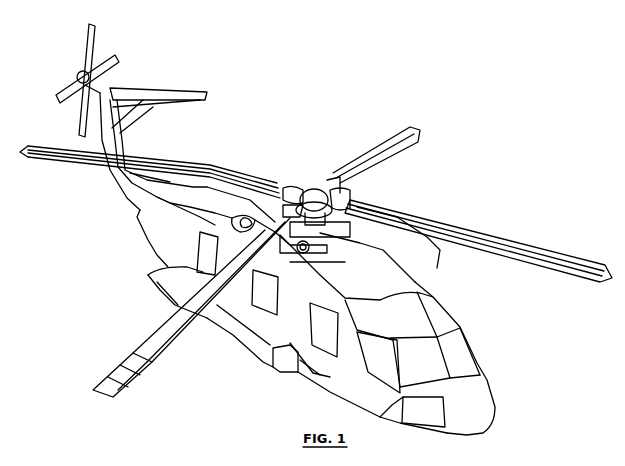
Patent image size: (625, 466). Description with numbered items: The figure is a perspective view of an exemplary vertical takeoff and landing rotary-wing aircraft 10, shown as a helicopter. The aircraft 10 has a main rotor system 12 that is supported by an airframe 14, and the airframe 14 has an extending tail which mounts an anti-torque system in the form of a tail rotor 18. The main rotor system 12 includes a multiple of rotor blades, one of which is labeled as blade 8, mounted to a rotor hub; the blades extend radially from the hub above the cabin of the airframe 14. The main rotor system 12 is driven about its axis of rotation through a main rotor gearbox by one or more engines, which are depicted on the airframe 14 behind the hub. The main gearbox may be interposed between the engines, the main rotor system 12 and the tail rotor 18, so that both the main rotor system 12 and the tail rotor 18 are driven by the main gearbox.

The rotary-wing aircraft 10 is at (450, 176).
The main rotor blade 8 is at (500, 238).
The main rotor system 12 is at (305, 182).
The airframe 14 is at (330, 376).
The tail rotor 18 is at (112, 41).